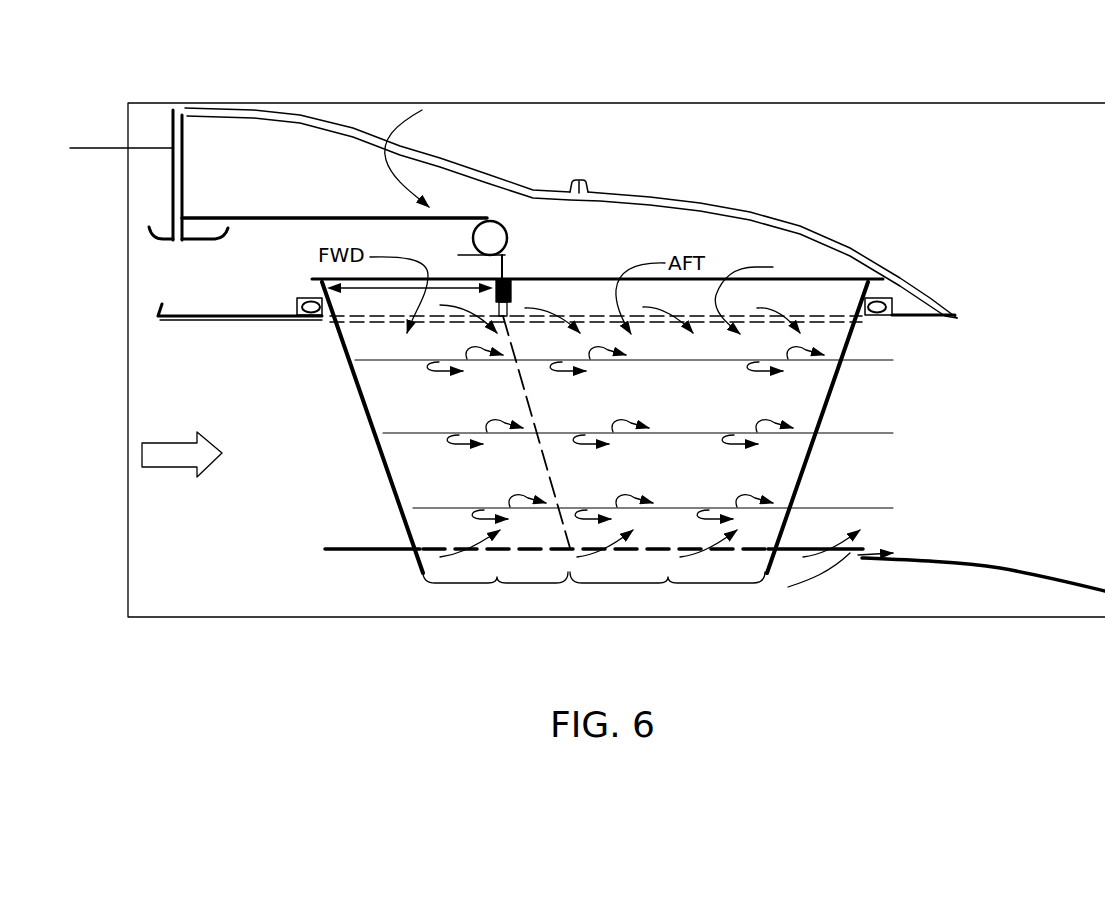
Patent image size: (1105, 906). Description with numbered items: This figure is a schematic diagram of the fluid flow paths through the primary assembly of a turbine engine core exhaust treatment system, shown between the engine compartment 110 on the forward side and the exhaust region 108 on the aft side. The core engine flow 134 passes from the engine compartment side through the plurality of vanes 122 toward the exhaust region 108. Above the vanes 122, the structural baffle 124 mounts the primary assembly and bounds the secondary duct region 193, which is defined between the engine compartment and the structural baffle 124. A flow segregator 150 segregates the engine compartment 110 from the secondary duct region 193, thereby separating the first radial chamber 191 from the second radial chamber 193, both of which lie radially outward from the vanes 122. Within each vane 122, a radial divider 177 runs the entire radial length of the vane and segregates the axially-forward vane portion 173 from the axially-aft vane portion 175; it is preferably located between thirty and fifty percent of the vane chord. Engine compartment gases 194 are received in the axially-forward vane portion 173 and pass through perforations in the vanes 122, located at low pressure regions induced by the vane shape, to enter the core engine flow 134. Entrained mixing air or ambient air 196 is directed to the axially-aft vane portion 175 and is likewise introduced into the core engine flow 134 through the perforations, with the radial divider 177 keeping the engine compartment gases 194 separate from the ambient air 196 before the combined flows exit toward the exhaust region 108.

The exhaust region 108 is at (1007, 538).
The engine compartment 110 is at (115, 247).
The vane 122 is at (828, 398).
The structural baffle 124 is at (678, 203).
The core engine flow 134 is at (182, 454).
The flow segregator 150 is at (508, 236).
The axially-forward vane portion 173 is at (495, 594).
The axially-aft vane portion 175 is at (667, 594).
The radial divider 177 is at (535, 398).
The first radial chamber 191 is at (334, 231).
The secondary duct region 193 is at (584, 207).
The engine compartment gases 194 is at (260, 303).
The ambient air 196 is at (801, 271).